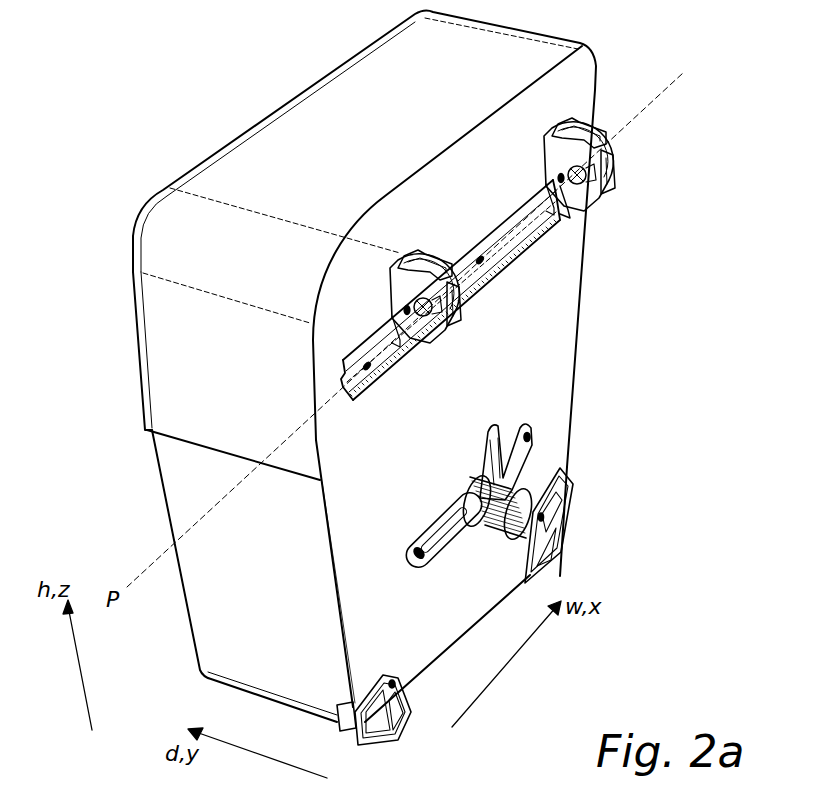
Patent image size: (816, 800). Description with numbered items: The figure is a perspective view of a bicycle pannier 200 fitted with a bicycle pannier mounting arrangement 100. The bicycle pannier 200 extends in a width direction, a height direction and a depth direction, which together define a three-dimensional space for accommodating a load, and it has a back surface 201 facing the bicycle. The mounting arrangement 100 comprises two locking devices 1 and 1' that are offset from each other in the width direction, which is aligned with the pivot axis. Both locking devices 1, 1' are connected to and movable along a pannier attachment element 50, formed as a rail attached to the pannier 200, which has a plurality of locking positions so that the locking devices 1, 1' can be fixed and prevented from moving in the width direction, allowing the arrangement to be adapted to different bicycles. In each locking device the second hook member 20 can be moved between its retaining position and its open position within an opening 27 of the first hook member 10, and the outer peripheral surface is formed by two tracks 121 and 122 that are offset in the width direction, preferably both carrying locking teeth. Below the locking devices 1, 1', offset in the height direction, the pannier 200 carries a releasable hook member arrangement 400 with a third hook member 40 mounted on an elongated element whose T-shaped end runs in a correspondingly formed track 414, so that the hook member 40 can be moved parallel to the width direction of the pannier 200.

The bicycle pannier mounting arrangement 100 is at (637, 146).
The bicycle pannier 200 is at (327, 123).
The back surface 201 is at (553, 355).
The locking device 1 is at (465, 205).
The locking device 1' is at (531, 135).
The track 121 is at (395, 278).
The track 122 is at (407, 260).
The opening 27 is at (450, 287).
The first hook member 10 is at (453, 317).
The second hook member 20 is at (430, 327).
The pannier attachment element 50 is at (575, 200).
The releasable hook member arrangement 400 is at (602, 440).
The third hook member 40 is at (490, 463).
The track 414 is at (450, 542).